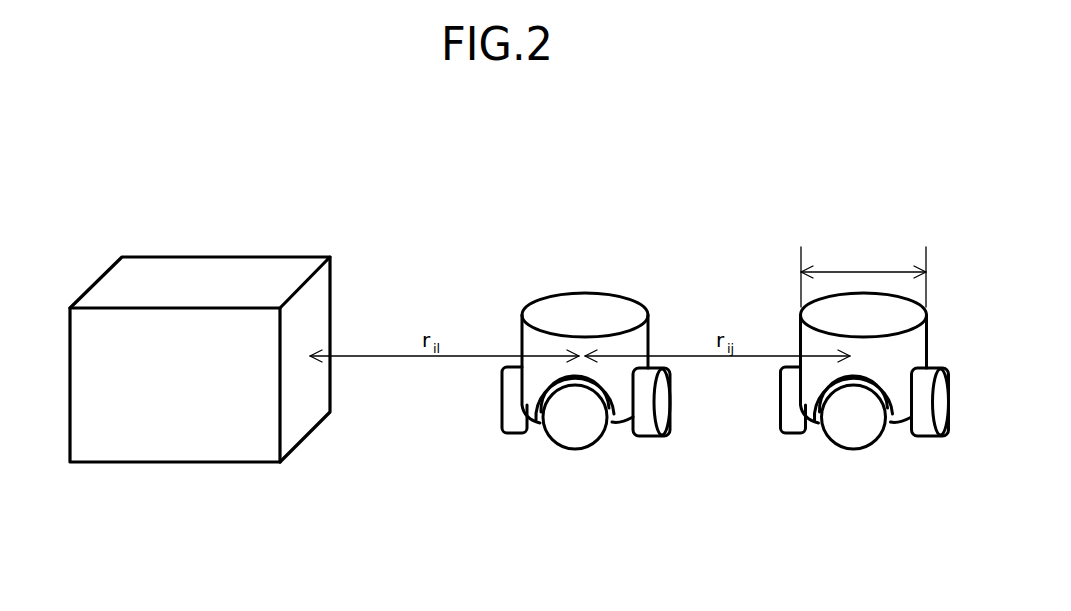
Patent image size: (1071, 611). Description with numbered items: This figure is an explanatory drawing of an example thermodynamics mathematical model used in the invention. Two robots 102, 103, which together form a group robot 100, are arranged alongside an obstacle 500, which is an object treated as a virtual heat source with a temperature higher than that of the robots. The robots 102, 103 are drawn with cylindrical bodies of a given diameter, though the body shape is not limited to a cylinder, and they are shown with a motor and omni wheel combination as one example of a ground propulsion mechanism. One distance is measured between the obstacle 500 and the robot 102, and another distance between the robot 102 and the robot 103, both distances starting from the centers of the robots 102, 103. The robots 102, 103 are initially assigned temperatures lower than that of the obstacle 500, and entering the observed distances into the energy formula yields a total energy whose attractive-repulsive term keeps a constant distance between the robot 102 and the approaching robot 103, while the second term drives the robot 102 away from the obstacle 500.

The obstacle 500 is at (270, 257).
The robot 102 is at (595, 293).
The robot 103 is at (927, 313).
The group robot 100 is at (877, 306).